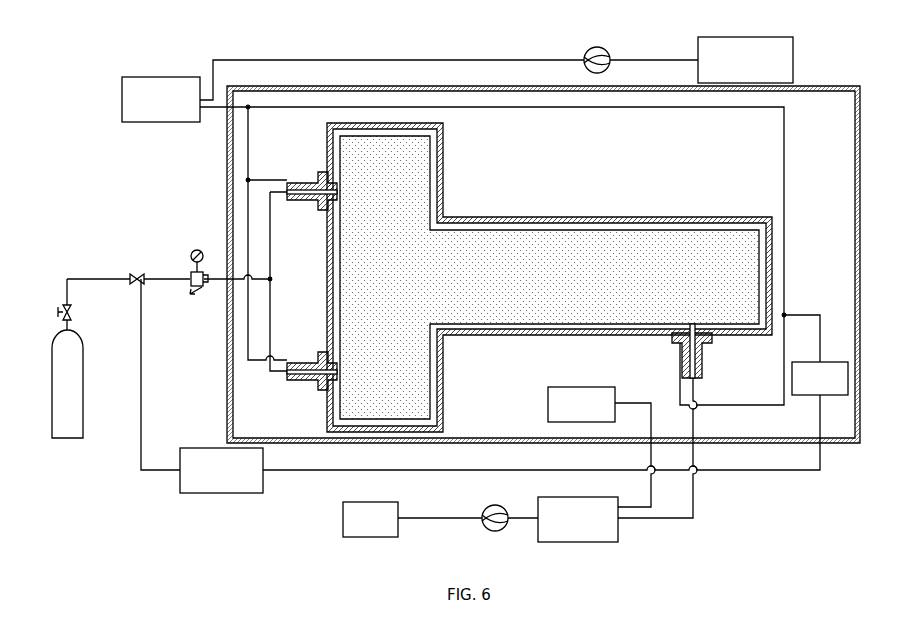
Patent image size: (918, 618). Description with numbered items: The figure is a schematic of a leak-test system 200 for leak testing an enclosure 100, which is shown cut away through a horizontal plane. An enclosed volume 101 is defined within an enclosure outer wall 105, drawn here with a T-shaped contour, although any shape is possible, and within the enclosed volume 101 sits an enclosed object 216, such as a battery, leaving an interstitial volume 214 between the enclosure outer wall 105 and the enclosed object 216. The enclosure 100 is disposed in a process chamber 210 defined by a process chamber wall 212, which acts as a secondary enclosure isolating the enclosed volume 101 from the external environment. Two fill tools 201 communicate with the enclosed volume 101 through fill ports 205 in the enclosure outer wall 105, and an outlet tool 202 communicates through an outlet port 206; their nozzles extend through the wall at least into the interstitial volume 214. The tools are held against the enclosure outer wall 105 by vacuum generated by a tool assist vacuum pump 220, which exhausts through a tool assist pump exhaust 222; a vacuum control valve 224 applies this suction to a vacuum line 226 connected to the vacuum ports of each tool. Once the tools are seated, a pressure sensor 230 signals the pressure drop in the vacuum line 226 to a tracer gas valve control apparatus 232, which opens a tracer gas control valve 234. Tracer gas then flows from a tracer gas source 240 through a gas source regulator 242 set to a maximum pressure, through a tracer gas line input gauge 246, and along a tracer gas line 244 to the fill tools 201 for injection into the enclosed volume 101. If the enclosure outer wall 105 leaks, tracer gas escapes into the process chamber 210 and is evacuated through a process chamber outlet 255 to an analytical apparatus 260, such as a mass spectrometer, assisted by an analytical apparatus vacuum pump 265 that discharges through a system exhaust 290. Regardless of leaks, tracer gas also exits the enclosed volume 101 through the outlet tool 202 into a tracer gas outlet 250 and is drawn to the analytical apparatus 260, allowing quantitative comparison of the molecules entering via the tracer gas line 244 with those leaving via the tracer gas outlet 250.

The enclosure 100 is at (549, 277).
The enclosed volume 101 is at (564, 266).
The enclosure outer wall 105 is at (514, 217).
The leak-test system 200 is at (78, 96).
The fill tool 201 is at (299, 183).
The outlet tool 202 is at (684, 362).
The fill port 205 is at (321, 196).
The outlet port 206 is at (698, 343).
The process chamber 210 is at (843, 166).
The process chamber wall 212 is at (861, 125).
The interstitial volume 214 is at (433, 160).
The enclosed object 216 is at (669, 280).
The tool assist vacuum pump 220 is at (597, 47).
The tool assist pump exhaust 222 is at (759, 68).
The vacuum control valve 224 is at (174, 108).
The vacuum line 226 is at (787, 213).
The pressure sensor 230 is at (833, 386).
The tracer gas valve control apparatus 232 is at (235, 478).
The tracer gas control valve 234 is at (136, 273).
The tracer gas source 240 is at (62, 381).
The gas source regulator 242 is at (58, 310).
The tracer gas line 244 is at (276, 250).
The tracer gas line input gauge 246 is at (195, 250).
The tracer gas outlet 250 is at (696, 425).
The process chamber outlet 255 is at (595, 412).
The analytical apparatus 260 is at (591, 527).
The analytical apparatus vacuum pump 265 is at (490, 505).
The system exhaust 290 is at (384, 527).